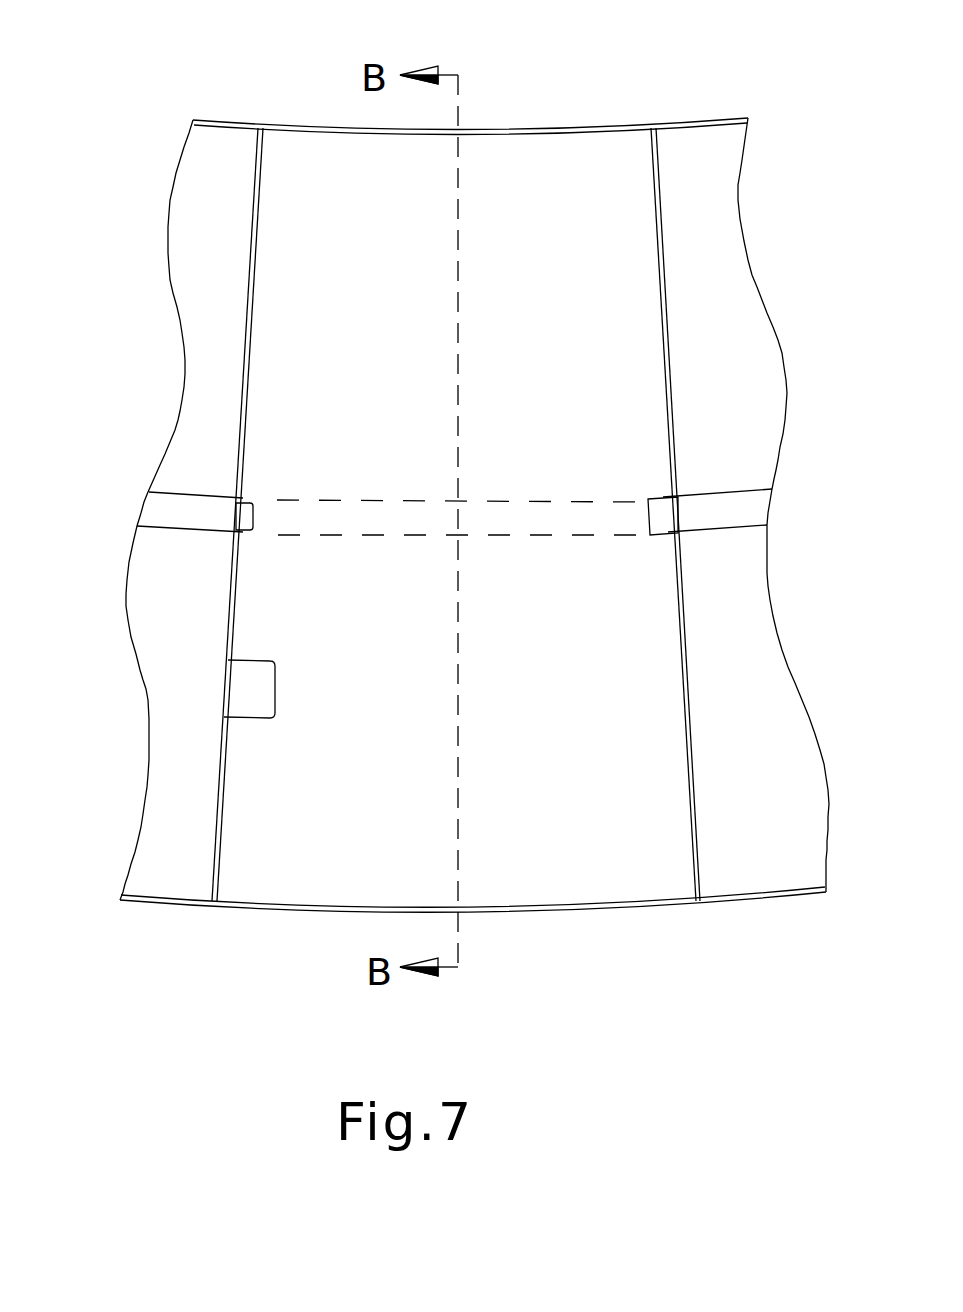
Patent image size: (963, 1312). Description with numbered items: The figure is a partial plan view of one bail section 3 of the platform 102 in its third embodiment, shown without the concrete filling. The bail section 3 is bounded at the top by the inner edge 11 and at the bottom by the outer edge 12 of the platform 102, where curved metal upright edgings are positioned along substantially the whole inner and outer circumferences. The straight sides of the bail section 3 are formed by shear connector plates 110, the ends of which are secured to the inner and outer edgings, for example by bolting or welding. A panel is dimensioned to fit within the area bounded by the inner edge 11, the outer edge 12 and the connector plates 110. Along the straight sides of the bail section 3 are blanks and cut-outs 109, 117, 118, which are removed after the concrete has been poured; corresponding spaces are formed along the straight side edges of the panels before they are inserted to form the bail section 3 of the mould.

The platform 102 is at (139, 82).
The bail section 3 is at (313, 133).
The inner edge 11 is at (614, 107).
The outer edge 12 is at (598, 929).
The shear connector plate 110 is at (718, 890).
The blank and cut-out 117 is at (264, 495).
The blank and cut-out 118 is at (649, 497).
The blank and cut-out 109 is at (270, 687).